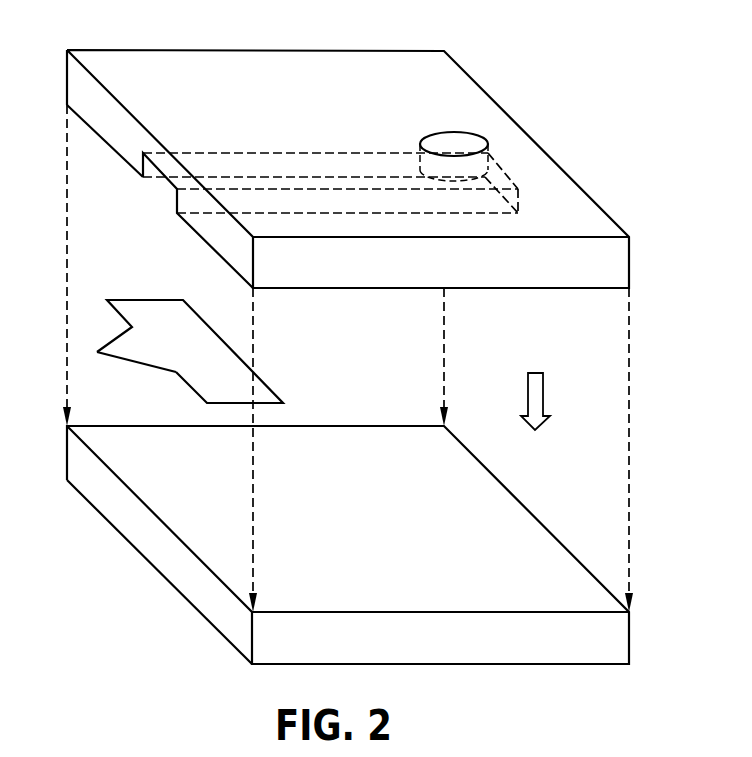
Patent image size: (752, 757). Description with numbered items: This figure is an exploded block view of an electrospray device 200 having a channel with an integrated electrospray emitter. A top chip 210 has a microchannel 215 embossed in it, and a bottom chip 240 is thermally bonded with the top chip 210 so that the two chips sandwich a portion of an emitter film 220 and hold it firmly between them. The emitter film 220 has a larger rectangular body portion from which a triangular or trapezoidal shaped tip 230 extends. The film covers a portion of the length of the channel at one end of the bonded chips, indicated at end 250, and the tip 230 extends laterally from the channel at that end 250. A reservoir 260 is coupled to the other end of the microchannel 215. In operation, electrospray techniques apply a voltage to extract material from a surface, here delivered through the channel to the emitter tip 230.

The electrospray device 200 is at (347, 338).
The top chip 210 is at (318, 150).
The microchannel 215 is at (158, 194).
The emitter film 220 is at (145, 339).
The tip 230 is at (137, 365).
The bottom chip 240 is at (630, 640).
The end of channel 250 is at (110, 127).
The reservoir 260 is at (463, 138).